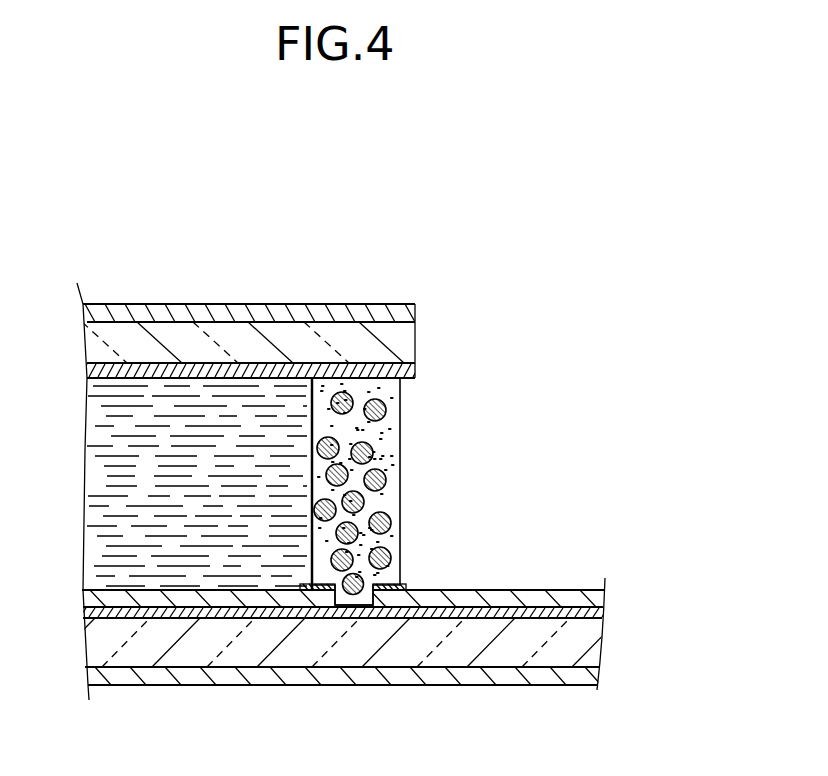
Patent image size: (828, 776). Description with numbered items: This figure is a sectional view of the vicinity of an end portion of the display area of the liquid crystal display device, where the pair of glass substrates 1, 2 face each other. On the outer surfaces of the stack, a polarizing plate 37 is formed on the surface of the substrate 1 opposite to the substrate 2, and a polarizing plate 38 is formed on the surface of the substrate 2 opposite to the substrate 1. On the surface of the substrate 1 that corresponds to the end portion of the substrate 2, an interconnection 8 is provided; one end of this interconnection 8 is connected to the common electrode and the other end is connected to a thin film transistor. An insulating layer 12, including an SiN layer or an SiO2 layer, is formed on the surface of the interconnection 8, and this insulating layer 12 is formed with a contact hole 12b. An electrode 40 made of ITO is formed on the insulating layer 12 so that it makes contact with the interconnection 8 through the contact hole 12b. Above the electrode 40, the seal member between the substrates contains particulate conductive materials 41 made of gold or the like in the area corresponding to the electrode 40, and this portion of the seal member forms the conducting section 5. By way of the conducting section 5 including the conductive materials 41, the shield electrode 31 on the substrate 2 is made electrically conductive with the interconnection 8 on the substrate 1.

The polarizing plate 38 is at (417, 317).
The glass substrate 2 is at (403, 343).
The shield electrode 31 is at (420, 373).
The conducting section 5 is at (395, 451).
The particulate conductive materials 41 is at (382, 528).
The electrode 40 is at (405, 586).
The insulating layer 12 is at (590, 592).
The contact hole 12b is at (352, 607).
The interconnection 8 is at (585, 612).
The glass substrate 1 is at (583, 640).
The polarizing plate 37 is at (590, 678).